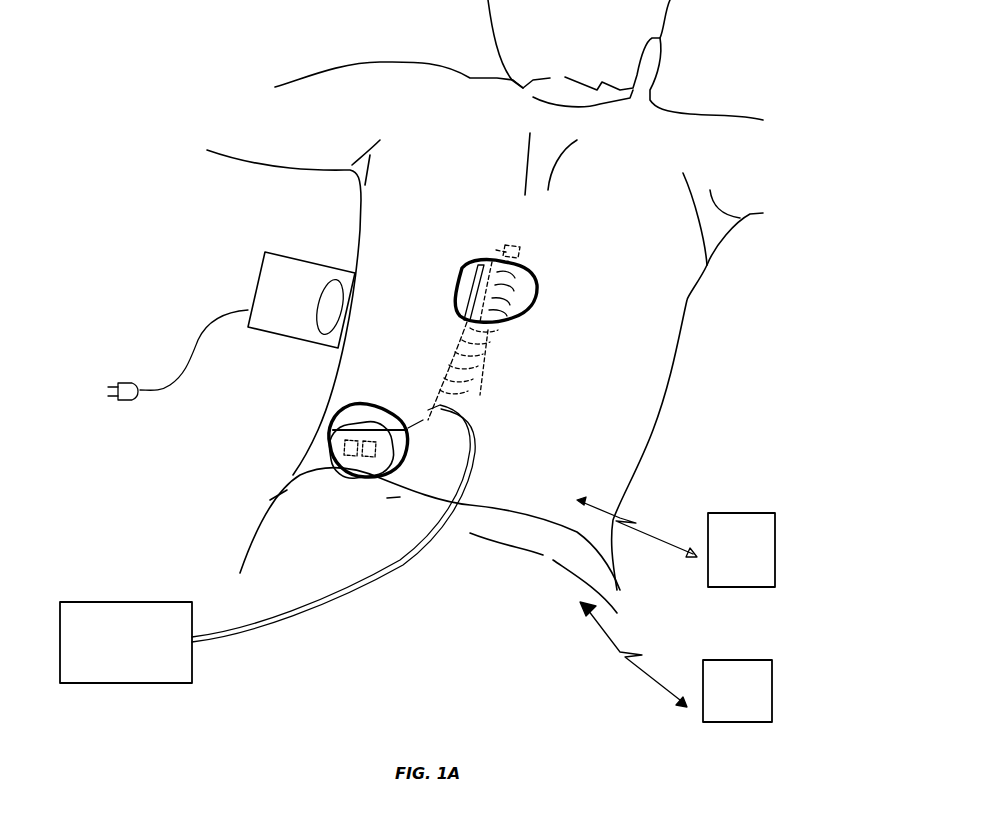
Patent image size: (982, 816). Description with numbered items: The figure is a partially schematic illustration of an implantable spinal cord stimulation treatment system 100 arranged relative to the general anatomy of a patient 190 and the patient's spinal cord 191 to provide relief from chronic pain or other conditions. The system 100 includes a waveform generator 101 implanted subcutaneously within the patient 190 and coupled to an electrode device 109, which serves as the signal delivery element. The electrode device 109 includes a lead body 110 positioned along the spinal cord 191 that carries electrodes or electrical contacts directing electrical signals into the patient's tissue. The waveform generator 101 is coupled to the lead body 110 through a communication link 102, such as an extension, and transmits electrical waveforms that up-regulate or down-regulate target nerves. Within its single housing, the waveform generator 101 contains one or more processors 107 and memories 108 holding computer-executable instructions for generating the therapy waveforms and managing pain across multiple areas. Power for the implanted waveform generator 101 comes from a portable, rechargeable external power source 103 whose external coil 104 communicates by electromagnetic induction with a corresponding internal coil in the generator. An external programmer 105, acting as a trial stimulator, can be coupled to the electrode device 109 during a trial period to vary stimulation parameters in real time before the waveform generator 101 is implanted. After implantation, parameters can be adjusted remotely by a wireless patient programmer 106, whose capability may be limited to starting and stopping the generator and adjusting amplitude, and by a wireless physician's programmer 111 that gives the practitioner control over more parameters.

The treatment system 100 is at (250, 406).
The waveform generator 101 is at (400, 450).
The communication link 102 is at (440, 408).
The external power source 103 is at (297, 253).
The external coil 104 is at (318, 332).
The external programmer 105 is at (103, 605).
The patient programmer 106 is at (775, 538).
The processor 107 is at (330, 462).
The memory 108 is at (365, 453).
The electrode device 109 is at (457, 260).
The lead body 110 is at (470, 300).
The physician's programmer 111 is at (772, 685).
The patient 190 is at (650, 395).
The spinal cord 191 is at (493, 363).